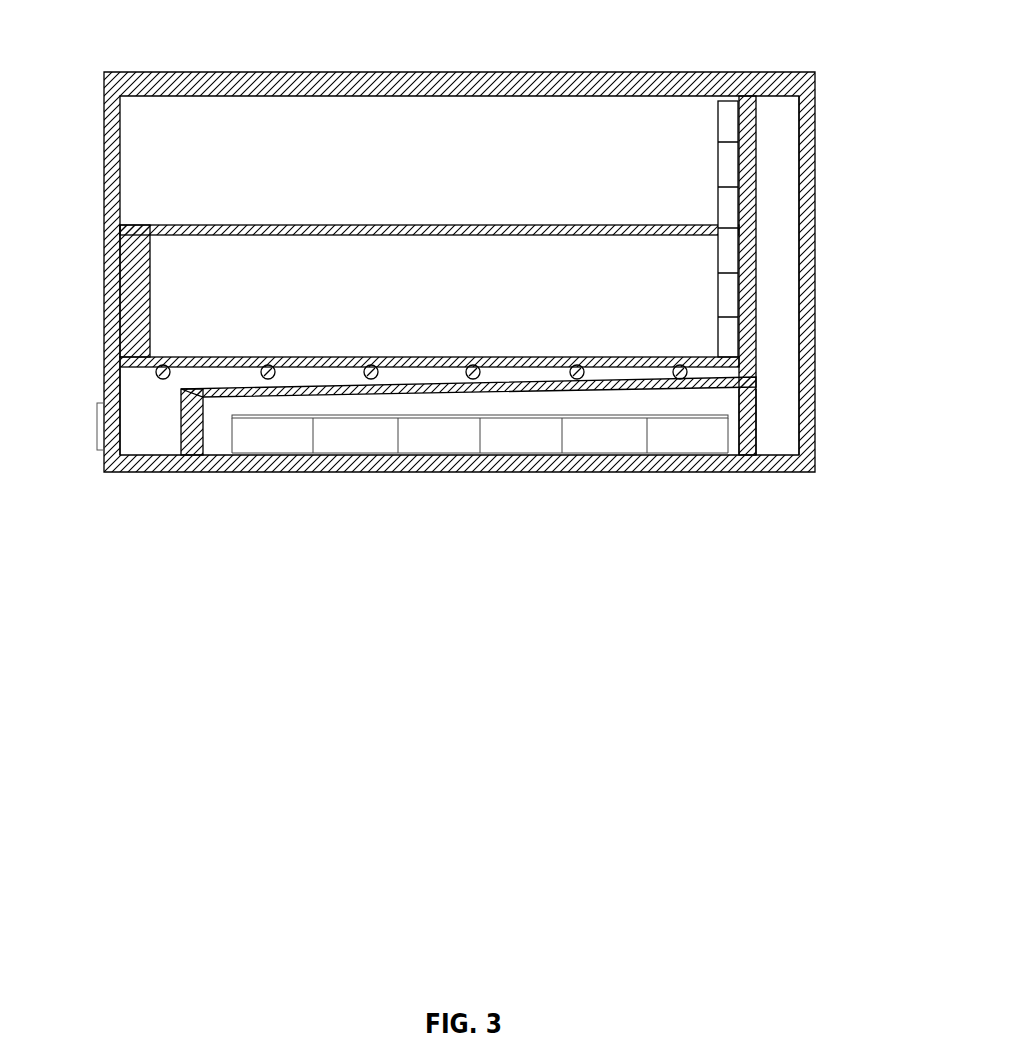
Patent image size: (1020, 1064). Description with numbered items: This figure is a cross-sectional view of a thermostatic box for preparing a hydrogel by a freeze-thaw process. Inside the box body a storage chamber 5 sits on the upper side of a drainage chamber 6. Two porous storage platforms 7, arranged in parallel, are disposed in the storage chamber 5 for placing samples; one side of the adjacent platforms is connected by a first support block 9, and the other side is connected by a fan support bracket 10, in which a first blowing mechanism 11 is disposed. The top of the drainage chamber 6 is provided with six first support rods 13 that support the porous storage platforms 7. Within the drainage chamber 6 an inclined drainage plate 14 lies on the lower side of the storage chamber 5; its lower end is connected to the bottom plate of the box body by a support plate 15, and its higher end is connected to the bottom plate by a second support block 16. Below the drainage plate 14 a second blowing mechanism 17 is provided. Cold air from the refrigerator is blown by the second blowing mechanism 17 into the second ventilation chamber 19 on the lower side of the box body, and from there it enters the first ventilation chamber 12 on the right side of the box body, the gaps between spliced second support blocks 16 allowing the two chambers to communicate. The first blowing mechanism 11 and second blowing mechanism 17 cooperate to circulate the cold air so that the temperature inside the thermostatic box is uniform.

The storage chamber 5 is at (233, 137).
The drainage chamber 6 is at (158, 425).
The porous storage platform 7 is at (643, 225).
The first support block 9 is at (125, 297).
The fan support bracket 10 is at (755, 180).
The first blowing mechanism 11 is at (730, 325).
The first ventilation chamber 12 is at (780, 258).
The first support rod 13 is at (160, 378).
The drainage plate 14 is at (502, 390).
The support plate 15 is at (198, 425).
The second support block 16 is at (748, 420).
The second blowing mechanism 17 is at (407, 432).
The second ventilation chamber 19 is at (598, 408).